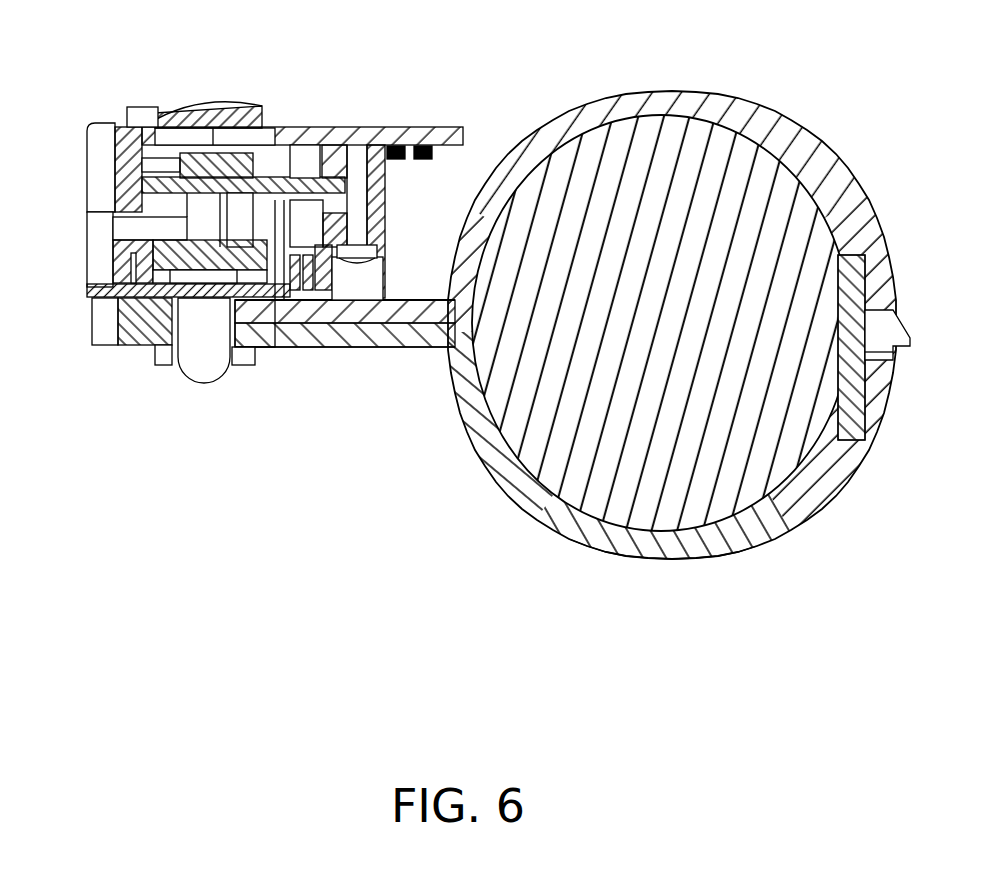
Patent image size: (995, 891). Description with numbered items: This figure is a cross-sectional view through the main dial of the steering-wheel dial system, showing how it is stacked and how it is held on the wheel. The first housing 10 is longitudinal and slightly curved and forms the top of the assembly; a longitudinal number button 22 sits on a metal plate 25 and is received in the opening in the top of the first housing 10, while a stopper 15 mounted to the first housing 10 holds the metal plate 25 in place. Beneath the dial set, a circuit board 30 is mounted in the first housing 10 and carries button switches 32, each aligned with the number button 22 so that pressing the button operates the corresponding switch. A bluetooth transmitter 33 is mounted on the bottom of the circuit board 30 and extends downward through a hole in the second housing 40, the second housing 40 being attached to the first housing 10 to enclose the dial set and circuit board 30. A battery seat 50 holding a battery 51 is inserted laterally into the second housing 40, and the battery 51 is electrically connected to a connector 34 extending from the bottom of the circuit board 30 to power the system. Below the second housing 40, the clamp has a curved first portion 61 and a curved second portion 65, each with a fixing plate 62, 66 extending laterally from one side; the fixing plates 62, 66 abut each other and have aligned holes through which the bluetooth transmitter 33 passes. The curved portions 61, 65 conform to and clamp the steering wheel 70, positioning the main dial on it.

The first housing 10 is at (413, 146).
The stopper 15 is at (418, 160).
The longitudinal number button 22 is at (218, 105).
The metal plate 25 is at (158, 107).
The circuit board 30 is at (274, 185).
The button switch 32 is at (180, 172).
The bluetooth transmitter 33 is at (200, 372).
The connector 34 is at (271, 347).
The second housing 40 is at (158, 300).
The battery seat 50 is at (112, 258).
The battery 51 is at (108, 286).
The curved first portion 61 is at (750, 122).
The fixing plate 62 is at (425, 300).
The curved second portion 65 is at (612, 562).
The fixing plate 66 is at (375, 347).
The steering wheel 70 is at (748, 430).